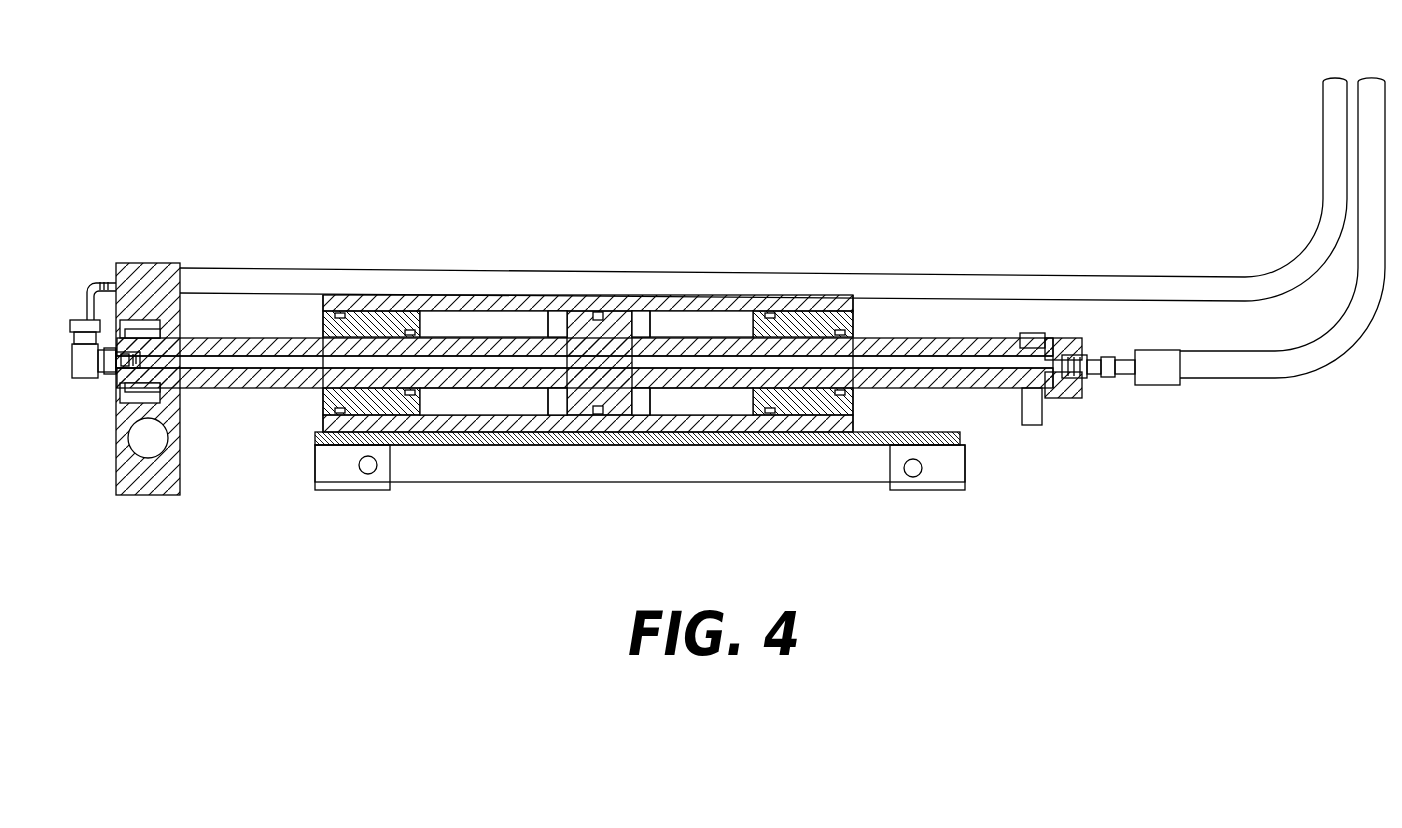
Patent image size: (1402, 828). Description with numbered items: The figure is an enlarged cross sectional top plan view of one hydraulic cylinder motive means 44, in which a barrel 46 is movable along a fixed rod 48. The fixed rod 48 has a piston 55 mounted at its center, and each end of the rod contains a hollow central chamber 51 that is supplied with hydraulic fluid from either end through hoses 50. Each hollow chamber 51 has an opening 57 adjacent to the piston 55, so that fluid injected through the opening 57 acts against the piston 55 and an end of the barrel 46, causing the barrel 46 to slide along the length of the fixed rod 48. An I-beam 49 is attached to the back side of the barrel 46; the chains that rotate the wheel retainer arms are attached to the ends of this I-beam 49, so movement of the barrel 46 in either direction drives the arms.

The motive means 44 is at (588, 311).
The barrel 46 is at (745, 295).
The fixed rod 48 is at (966, 395).
The I-beam 49 is at (725, 484).
The hoses 50 is at (1016, 276).
The hollow central chamber 51 is at (278, 368).
The piston 55 is at (565, 333).
The opening 57 is at (552, 333).